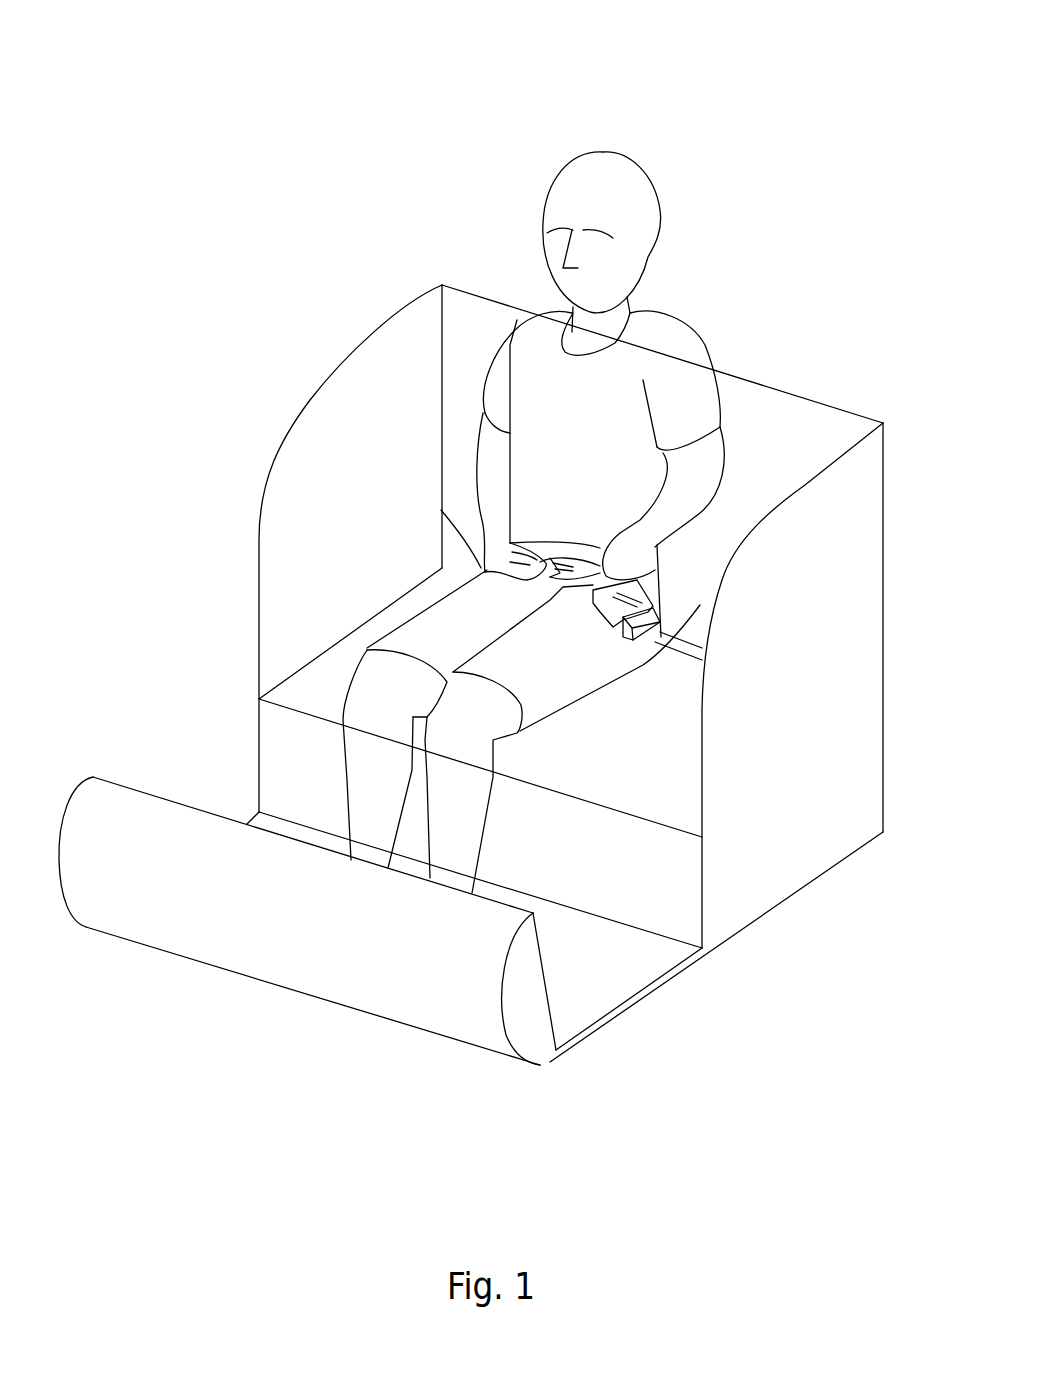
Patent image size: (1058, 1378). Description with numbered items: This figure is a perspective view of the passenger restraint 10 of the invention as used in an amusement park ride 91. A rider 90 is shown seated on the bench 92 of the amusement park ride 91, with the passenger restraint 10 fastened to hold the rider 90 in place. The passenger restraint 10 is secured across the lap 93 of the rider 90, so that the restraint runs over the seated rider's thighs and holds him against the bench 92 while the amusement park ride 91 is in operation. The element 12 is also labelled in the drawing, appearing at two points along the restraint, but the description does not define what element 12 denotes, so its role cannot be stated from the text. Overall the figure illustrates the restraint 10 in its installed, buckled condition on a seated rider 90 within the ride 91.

The passenger restraint 10 is at (650, 583).
The seat belt webbing 12 is at (460, 537).
The rider 90 is at (507, 357).
The amusement park ride 91 is at (784, 60).
The bench 92 is at (793, 392).
The lap 93 is at (453, 613).